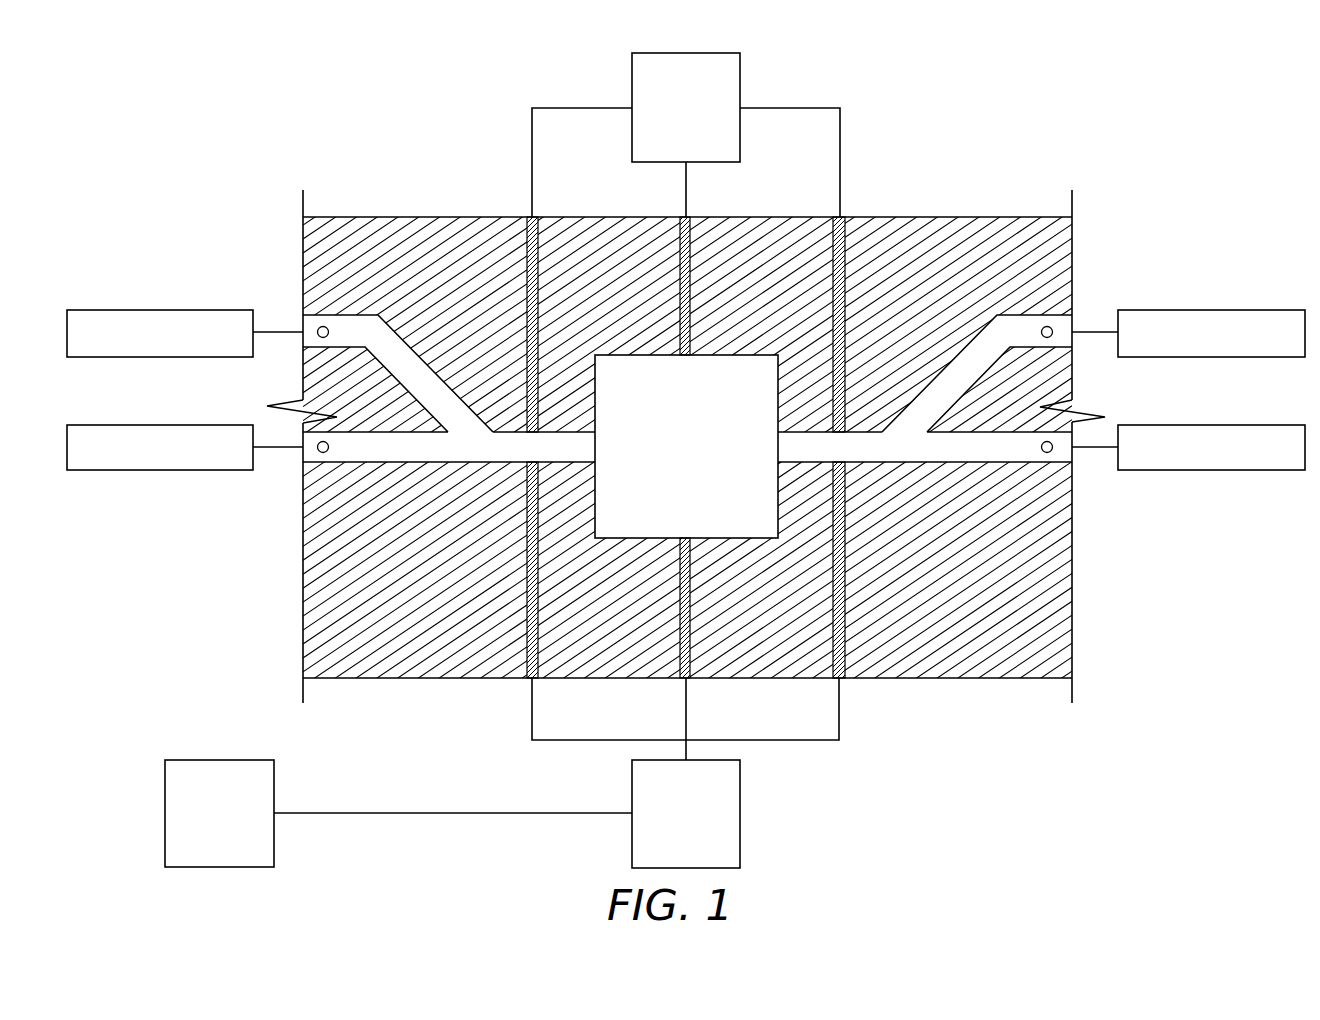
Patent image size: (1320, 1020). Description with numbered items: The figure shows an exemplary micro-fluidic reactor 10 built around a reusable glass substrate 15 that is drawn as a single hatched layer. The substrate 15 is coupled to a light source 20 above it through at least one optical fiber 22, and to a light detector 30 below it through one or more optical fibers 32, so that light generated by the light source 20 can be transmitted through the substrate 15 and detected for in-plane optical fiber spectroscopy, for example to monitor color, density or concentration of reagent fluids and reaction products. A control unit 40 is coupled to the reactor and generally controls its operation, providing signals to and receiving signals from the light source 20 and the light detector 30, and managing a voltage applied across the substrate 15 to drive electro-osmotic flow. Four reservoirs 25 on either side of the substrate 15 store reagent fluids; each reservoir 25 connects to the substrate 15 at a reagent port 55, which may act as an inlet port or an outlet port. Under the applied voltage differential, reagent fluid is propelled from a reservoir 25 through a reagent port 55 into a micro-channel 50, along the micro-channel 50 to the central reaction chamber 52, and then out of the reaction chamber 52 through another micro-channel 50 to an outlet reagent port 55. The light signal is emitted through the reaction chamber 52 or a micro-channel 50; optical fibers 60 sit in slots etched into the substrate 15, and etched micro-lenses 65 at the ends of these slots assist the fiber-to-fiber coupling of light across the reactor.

The micro-fluidic reactor 10 is at (1058, 118).
The substrate 15 is at (340, 217).
The light source 20 is at (703, 53).
The optical fiber 22 is at (557, 108).
The reservoir 25 is at (194, 310).
The light detector 30 is at (740, 813).
The optical fiber 32 is at (532, 708).
The control unit 40 is at (212, 760).
The micro-channel 50 is at (417, 352).
The reaction chamber 52 is at (757, 353).
The reagent port 55 is at (323, 326).
The optical fiber 60 is at (539, 244).
The micro-lens 65 is at (692, 350).